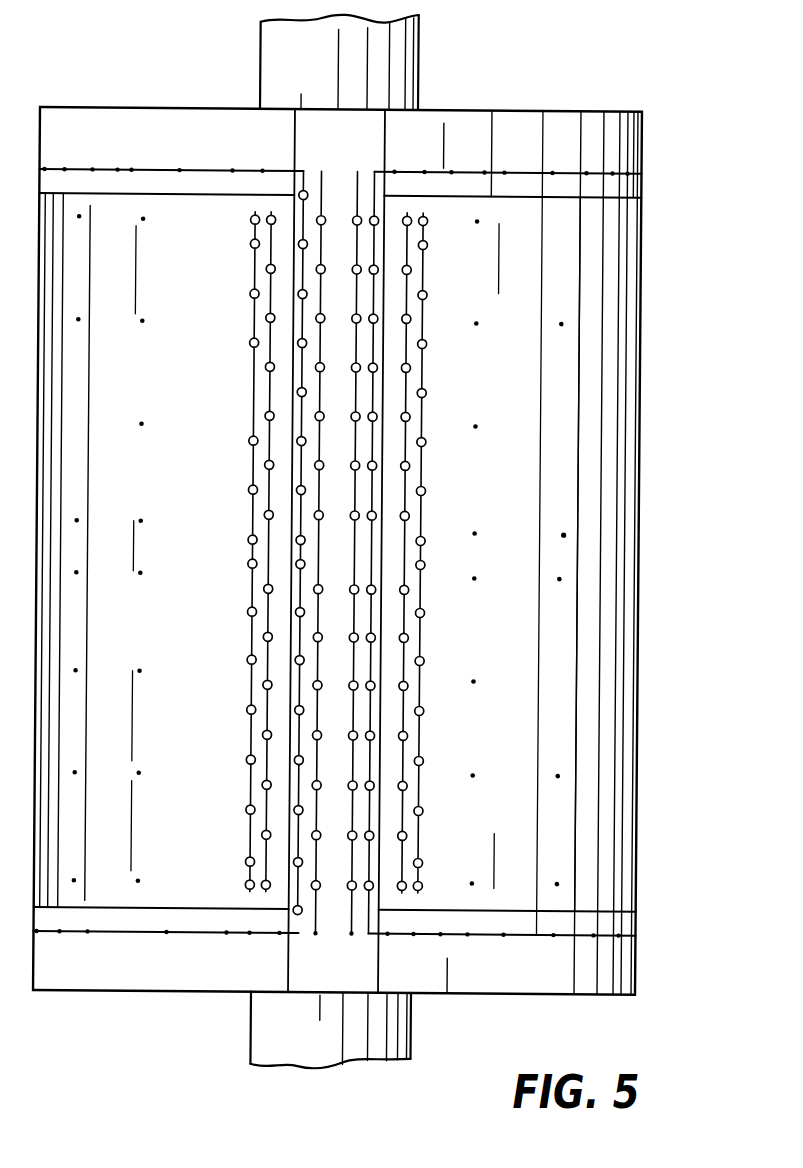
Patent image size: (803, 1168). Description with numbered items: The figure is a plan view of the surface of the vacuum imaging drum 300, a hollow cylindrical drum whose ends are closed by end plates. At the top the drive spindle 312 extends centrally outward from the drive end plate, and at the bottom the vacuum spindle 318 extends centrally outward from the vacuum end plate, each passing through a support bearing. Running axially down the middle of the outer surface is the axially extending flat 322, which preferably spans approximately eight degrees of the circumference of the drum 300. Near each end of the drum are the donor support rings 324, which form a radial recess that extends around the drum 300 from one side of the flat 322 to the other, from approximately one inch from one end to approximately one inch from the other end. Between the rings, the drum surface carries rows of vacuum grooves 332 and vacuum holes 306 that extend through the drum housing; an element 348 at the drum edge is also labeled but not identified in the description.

The imaging drum 300 is at (652, 634).
The vacuum holes 306 is at (567, 529).
The drive spindle 312 is at (260, 46).
The vacuum spindle 318 is at (325, 1044).
The axially extending flat 322 is at (349, 147).
The donor support rings 324 is at (178, 128).
The vacuum grooves 332 is at (611, 166).
The side wall strip 348 is at (588, 209).